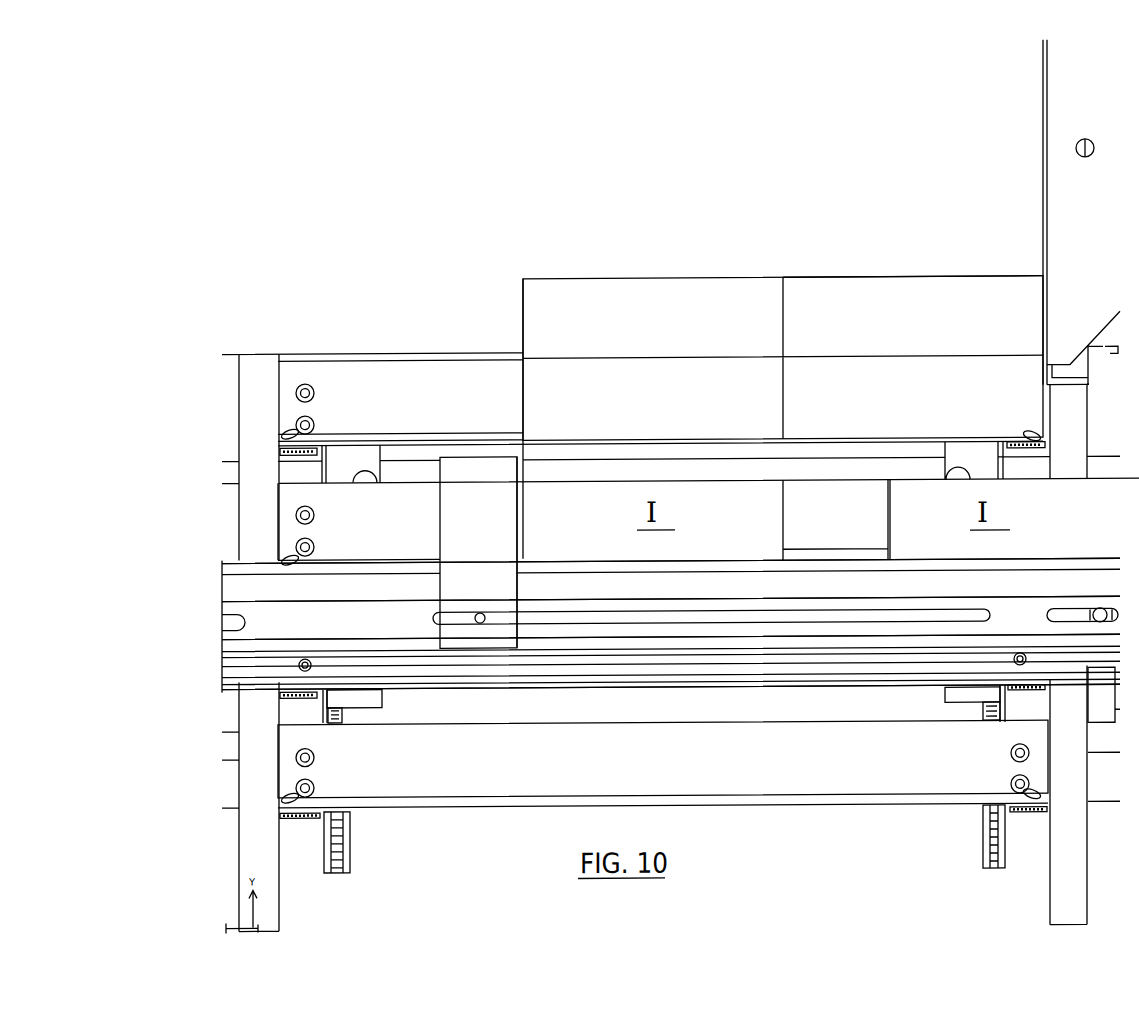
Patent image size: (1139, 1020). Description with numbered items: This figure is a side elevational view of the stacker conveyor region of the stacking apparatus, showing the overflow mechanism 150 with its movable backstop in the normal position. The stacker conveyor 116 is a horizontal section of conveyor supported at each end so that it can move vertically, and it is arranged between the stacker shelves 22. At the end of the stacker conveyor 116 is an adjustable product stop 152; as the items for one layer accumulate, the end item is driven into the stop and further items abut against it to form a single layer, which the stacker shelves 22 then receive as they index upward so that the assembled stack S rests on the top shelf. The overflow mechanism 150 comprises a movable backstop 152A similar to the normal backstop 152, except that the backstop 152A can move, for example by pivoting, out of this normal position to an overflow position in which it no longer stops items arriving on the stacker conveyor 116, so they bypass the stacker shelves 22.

The stacker shelves 22 is at (523, 439).
The stack S is at (840, 265).
The overflow mechanism 150 is at (418, 576).
The product stop 152 is at (455, 667).
The movable backstop 152A is at (455, 667).
The stacker conveyor 116 is at (671, 722).